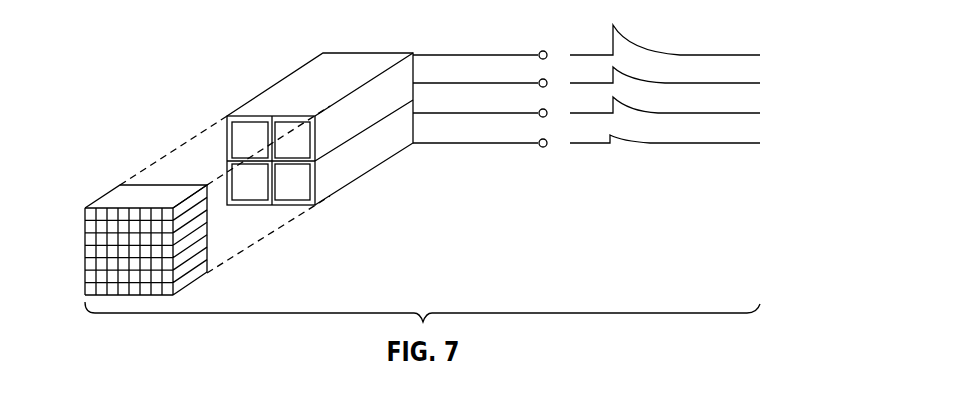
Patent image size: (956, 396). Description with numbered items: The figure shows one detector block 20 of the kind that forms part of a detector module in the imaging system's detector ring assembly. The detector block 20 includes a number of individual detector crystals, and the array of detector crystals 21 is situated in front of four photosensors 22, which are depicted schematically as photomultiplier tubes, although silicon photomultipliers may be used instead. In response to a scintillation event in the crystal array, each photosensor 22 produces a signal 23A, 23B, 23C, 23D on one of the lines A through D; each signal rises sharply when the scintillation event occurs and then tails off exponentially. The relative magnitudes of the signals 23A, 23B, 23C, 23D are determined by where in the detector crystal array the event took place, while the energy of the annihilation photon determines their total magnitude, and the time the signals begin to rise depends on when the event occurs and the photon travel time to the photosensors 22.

The detector block 20 is at (272, 75).
The array of detector crystals 21 is at (81, 258).
The photosensors 22 is at (372, 119).
The signal 23A is at (742, 55).
The signal 23B is at (742, 83).
The signal 23C is at (742, 113).
The signal 23D is at (742, 143).